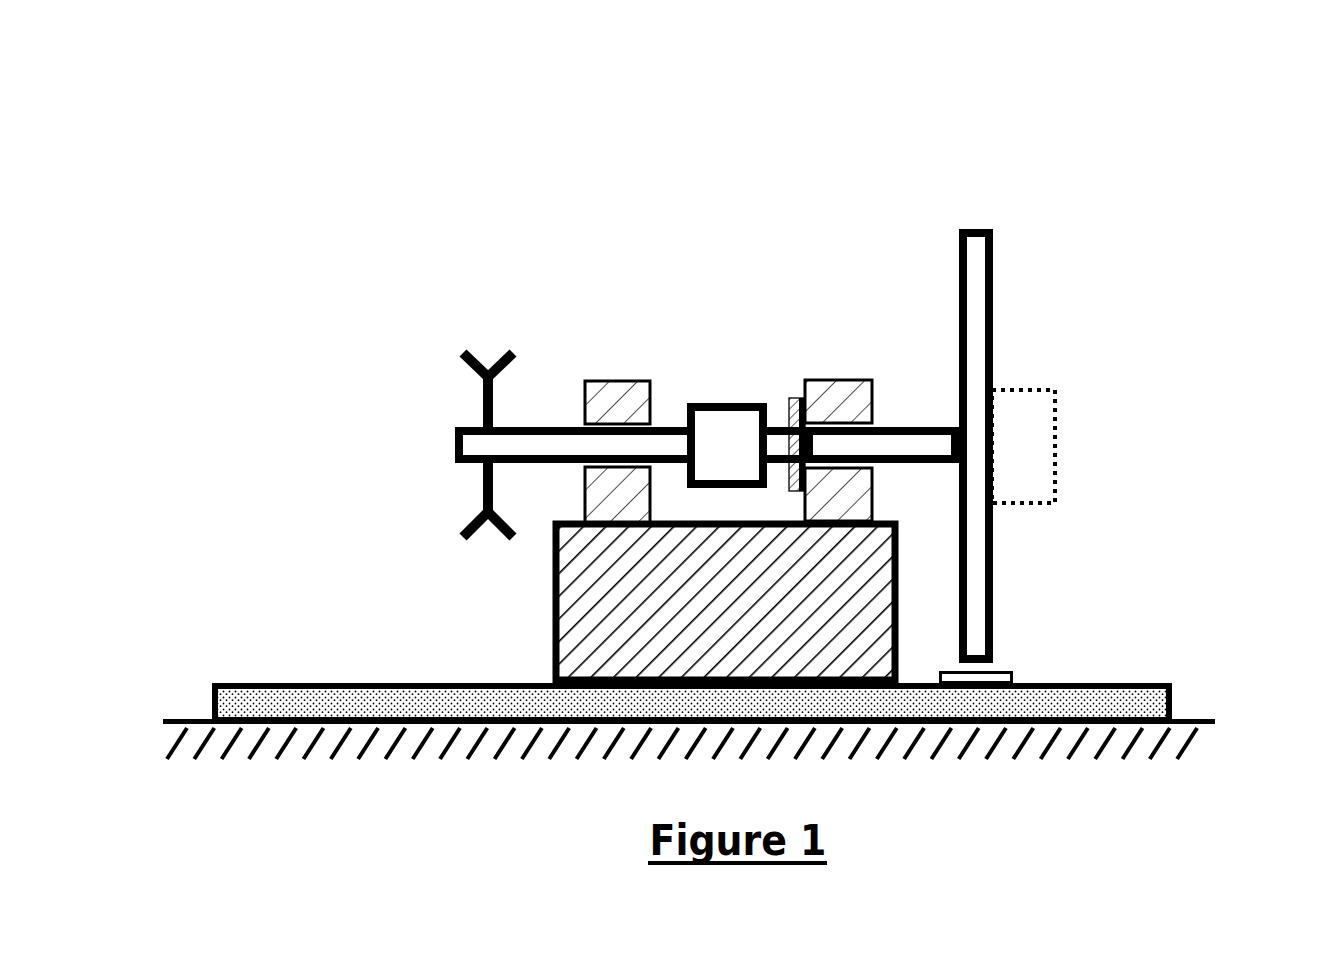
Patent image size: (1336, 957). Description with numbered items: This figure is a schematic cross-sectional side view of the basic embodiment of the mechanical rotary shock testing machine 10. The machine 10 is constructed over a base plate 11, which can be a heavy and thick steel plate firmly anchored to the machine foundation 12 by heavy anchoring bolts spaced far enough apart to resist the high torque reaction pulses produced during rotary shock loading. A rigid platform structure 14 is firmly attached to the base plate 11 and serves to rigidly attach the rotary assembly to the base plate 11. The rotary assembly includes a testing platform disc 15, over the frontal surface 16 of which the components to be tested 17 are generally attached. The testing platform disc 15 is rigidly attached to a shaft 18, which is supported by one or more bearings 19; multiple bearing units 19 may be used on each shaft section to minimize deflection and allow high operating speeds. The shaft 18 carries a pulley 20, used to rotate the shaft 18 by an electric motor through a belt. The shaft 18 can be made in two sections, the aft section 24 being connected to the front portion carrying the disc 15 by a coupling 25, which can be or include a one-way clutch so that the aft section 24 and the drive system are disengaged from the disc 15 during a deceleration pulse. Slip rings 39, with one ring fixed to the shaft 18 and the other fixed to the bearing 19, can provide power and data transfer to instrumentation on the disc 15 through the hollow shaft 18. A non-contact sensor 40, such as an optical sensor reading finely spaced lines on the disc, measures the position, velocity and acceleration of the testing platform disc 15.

The mechanical rotary shock testing machine 10 is at (1178, 257).
The base plate 11 is at (1178, 695).
The machine foundation 12 is at (1168, 741).
The rigid platform structure 14 is at (617, 589).
The testing platform disc 15 is at (959, 220).
The frontal surface 16 is at (993, 268).
The components to be tested 17 is at (1027, 435).
The shaft 18 is at (927, 444).
The bearings 19 is at (623, 402).
The pulley 20 is at (452, 510).
The aft section of the shaft 24 is at (529, 441).
The coupling 25 is at (728, 444).
The slip rings 39 is at (795, 390).
The sensor 40 is at (1020, 668).